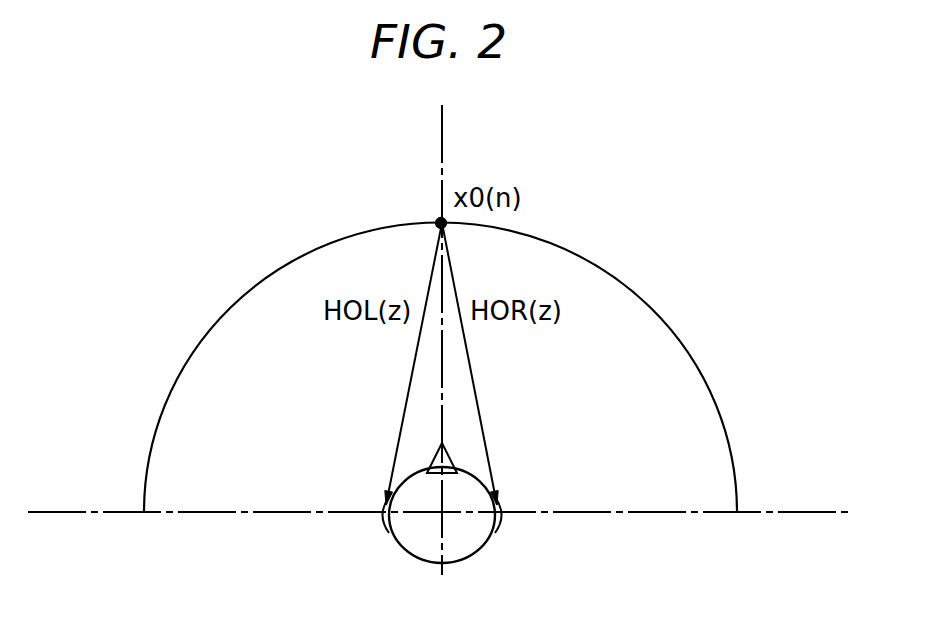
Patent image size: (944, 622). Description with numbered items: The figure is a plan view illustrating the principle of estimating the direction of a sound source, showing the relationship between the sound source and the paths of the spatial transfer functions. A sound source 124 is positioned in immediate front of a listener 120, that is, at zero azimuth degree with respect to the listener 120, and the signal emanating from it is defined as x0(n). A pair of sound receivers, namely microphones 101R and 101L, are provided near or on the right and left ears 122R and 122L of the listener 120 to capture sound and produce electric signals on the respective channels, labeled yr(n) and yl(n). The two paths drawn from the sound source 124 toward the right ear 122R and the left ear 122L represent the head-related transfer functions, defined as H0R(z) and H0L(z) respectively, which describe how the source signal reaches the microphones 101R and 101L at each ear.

The sound source 124 is at (438, 220).
The listener 120 is at (425, 562).
The left microphone 101L is at (385, 503).
The right microphone 101R is at (498, 503).
The left ear 122L is at (387, 523).
The right ear 122R is at (497, 525).